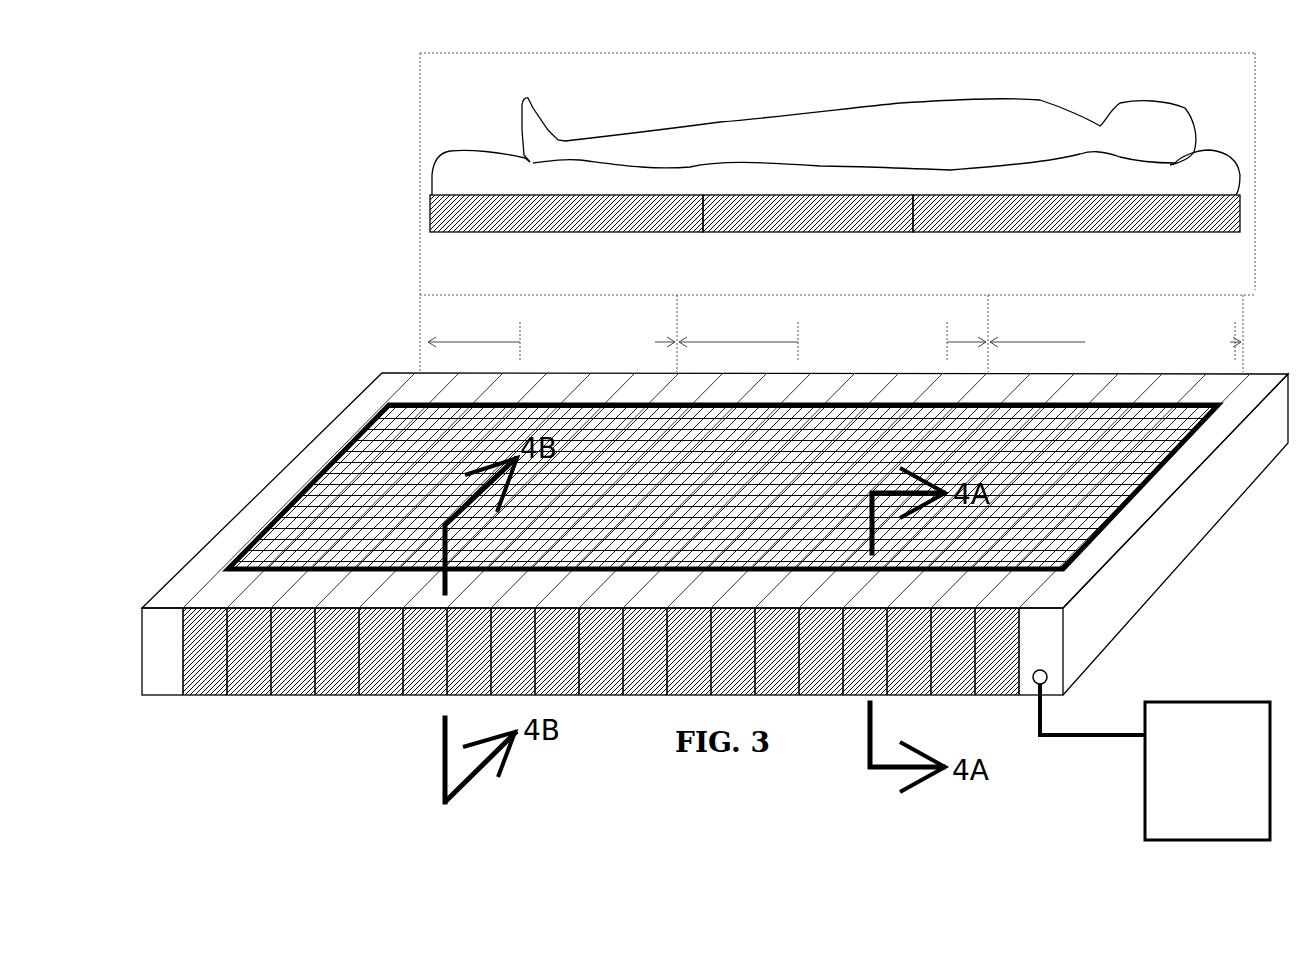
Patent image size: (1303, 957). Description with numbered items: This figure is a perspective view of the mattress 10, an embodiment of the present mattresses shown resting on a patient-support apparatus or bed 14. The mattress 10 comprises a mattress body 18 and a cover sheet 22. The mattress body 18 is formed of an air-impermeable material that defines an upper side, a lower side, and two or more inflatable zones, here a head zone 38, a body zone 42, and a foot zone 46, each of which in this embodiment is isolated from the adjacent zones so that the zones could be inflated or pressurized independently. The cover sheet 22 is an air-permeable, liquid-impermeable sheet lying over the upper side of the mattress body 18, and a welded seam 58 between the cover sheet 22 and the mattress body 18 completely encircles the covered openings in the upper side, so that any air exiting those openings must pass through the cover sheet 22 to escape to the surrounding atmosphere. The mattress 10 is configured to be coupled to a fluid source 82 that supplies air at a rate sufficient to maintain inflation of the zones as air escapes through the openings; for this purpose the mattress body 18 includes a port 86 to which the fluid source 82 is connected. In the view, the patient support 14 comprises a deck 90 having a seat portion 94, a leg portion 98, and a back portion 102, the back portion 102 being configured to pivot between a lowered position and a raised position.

The mattress 10 is at (1229, 138).
The patient-support apparatus or bed 14 is at (865, 213).
The mattress body 18 is at (1215, 174).
The cover sheet 22 is at (723, 454).
The head zone 38 is at (1115, 343).
The body zone 42 is at (832, 343).
The foot zone 46 is at (551, 343).
The welded seam 58 is at (372, 418).
The fluid source 82 is at (1207, 771).
The port 86 is at (1035, 690).
The deck 90 is at (836, 213).
The seat portion 94 is at (808, 213).
The leg portion 98 is at (566, 213).
The back portion 102 is at (1076, 213).